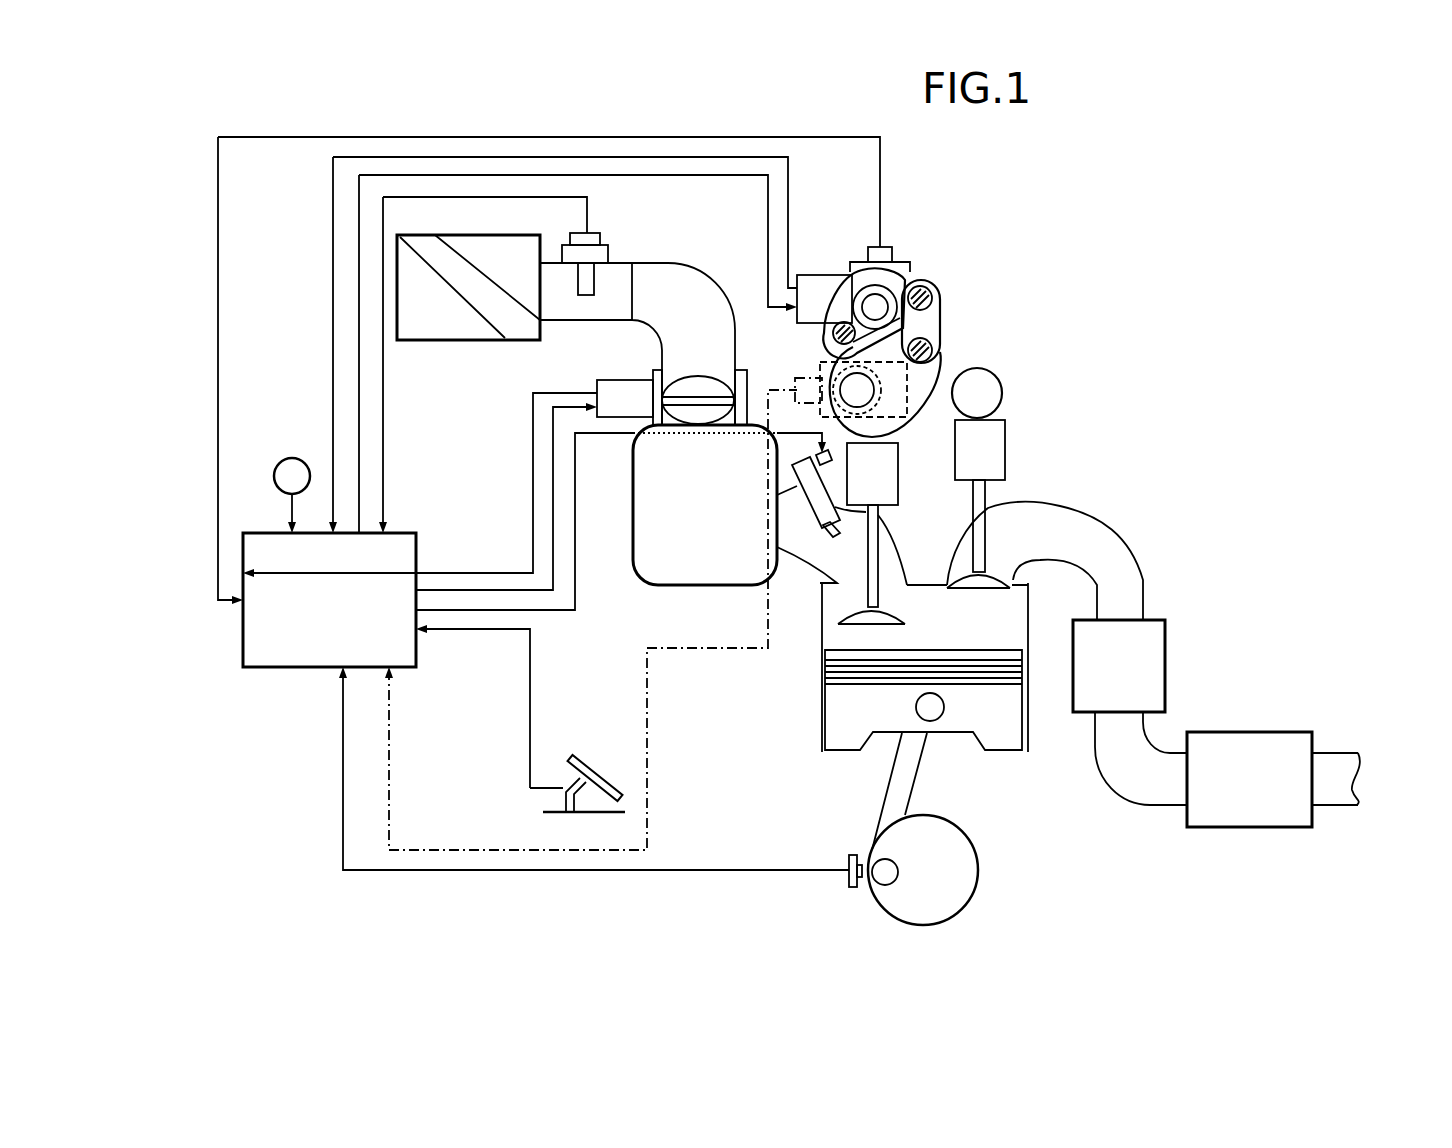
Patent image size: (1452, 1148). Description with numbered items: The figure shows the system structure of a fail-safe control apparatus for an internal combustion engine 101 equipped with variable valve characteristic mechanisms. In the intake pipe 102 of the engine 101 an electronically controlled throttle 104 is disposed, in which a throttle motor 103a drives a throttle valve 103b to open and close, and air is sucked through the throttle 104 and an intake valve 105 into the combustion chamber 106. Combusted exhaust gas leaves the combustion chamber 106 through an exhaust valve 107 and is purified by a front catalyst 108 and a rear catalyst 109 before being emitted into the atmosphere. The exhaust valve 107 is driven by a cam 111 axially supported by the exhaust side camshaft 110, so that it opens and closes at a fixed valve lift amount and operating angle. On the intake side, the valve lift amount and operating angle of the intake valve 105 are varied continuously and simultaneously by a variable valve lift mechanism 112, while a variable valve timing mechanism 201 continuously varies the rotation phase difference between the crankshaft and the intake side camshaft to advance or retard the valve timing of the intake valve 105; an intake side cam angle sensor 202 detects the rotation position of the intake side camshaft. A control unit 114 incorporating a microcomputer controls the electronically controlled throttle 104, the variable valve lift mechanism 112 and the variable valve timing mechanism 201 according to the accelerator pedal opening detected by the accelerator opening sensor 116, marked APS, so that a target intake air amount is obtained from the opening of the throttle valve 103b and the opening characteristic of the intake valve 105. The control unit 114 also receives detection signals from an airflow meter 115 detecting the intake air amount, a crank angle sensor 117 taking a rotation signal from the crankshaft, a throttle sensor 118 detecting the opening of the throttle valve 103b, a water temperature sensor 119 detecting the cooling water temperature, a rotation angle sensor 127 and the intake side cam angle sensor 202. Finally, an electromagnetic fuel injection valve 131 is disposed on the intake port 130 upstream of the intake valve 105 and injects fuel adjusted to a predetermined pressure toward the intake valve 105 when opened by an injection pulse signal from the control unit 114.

The internal combustion engine 101 is at (929, 713).
The intake pipe 102 is at (688, 283).
The throttle motor 103a is at (628, 390).
The throttle valve 103b is at (706, 388).
The electronically controlled throttle 104 is at (537, 376).
The intake valve 105 is at (870, 578).
The combustion chamber 106 is at (1015, 632).
The exhaust valve 107 is at (1000, 500).
The front catalyst 108 is at (1152, 640).
The rear catalyst 109 is at (1265, 732).
The exhaust side camshaft 110 is at (983, 378).
The cam 111 is at (955, 373).
The variable valve lift mechanism 112 is at (925, 350).
The control unit 114 is at (287, 668).
The airflow meter 115 is at (597, 242).
The accelerator opening sensor 116 is at (563, 812).
The crank angle sensor 117 is at (853, 850).
The throttle sensor 118 is at (748, 400).
The water temperature sensor 119 is at (287, 462).
The rotation angle sensor 127 is at (882, 250).
The intake port 130 is at (779, 550).
The electromagnetic fuel injection valve 131 is at (807, 482).
The variable valve timing mechanism 201 is at (913, 392).
The intake side cam angle sensor 202 is at (810, 378).